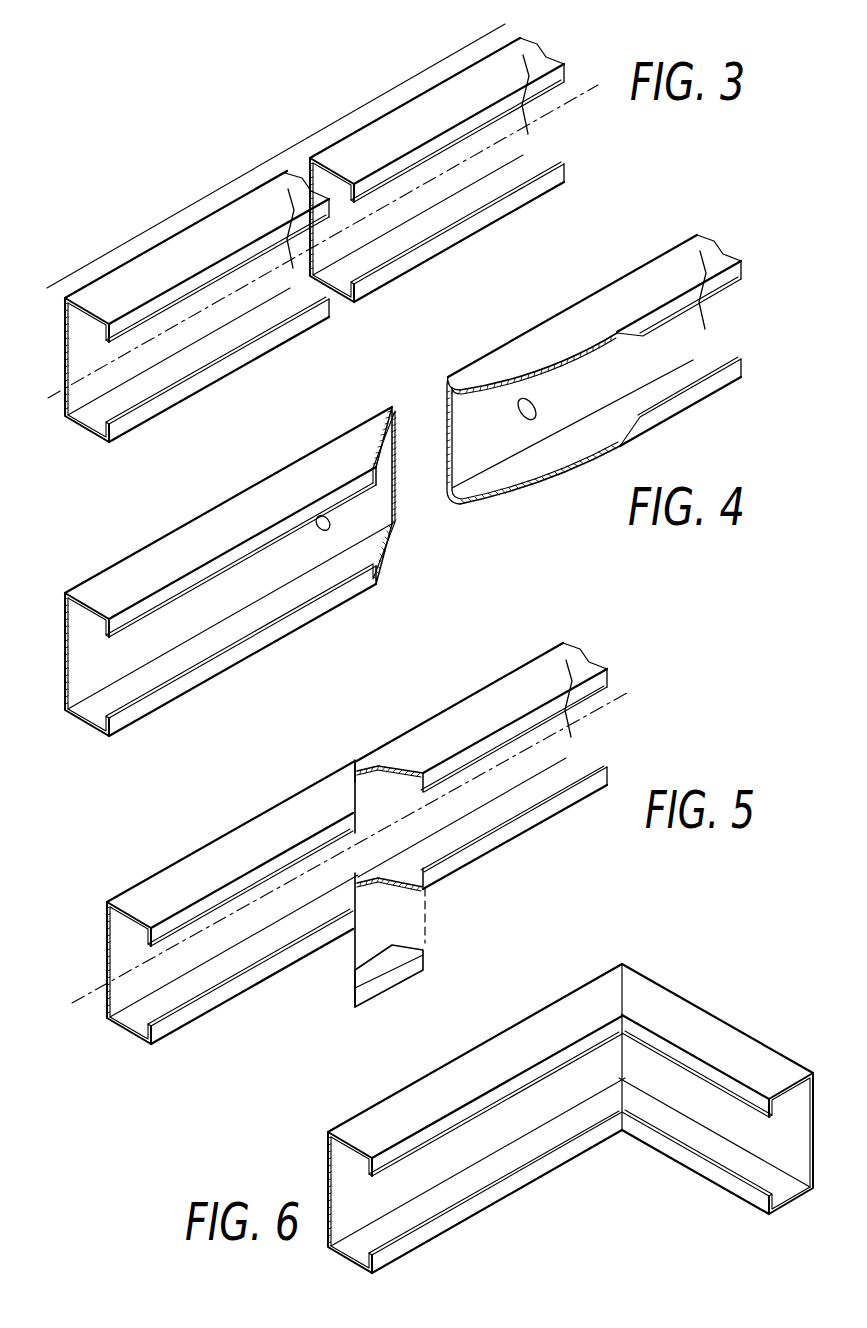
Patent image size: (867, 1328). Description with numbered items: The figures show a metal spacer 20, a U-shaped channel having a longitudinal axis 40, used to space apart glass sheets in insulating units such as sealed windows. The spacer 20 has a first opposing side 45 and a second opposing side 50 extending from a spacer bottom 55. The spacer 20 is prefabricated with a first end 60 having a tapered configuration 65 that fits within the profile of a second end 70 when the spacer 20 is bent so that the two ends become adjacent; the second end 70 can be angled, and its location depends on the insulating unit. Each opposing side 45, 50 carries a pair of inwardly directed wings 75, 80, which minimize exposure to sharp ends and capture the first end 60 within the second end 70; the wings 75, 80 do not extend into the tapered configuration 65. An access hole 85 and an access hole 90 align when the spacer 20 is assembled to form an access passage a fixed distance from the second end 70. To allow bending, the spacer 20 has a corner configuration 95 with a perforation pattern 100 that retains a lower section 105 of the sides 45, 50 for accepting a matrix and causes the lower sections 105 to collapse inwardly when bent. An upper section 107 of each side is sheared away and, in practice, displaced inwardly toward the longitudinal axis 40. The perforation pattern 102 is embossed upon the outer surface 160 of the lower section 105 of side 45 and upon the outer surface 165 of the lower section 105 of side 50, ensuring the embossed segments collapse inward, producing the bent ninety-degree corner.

In FIG. 3, the spacer 20 is at (283, 170).
In FIG. 4, the spacer 20 is at (175, 547).
In FIG. 5, the spacer 20 is at (188, 873).
In FIG. 6, the spacer 20 is at (425, 1102).
In FIG. 3, the longitudinal axis 40 is at (46, 403).
In FIG. 5, the longitudinal axis 40 is at (620, 698).
In FIG. 3, the first opposing side 45 is at (533, 57).
In FIG. 5, the first opposing side 45 is at (577, 660).
In FIG. 3, the second opposing side 50 is at (540, 162).
In FIG. 5, the second opposing side 50 is at (575, 767).
In FIG. 3, the spacer bottom 55 is at (537, 140).
In FIG. 4, the first end 60 is at (466, 375).
In FIG. 4, the tapered configuration 65 is at (540, 378).
In FIG. 4, the second end 70 is at (388, 418).
In FIG. 4, the wings 75 is at (385, 493).
In FIG. 4, the wings 80 is at (375, 585).
In FIG. 4, the access hole 85 is at (522, 416).
In FIG. 4, the access hole 90 is at (323, 532).
In FIG. 5, the corner configuration 95 is at (368, 740).
In FIG. 5, the perforation pattern 100 is at (353, 762).
In FIG. 5, the perforation pattern 102 is at (373, 889).
In FIG. 5, the lower section 105 is at (373, 767).
In FIG. 5, the upper section 107 is at (360, 988).
In FIG. 5, the outer surface 160 is at (472, 708).
In FIG. 5, the outer surface 165 is at (547, 823).